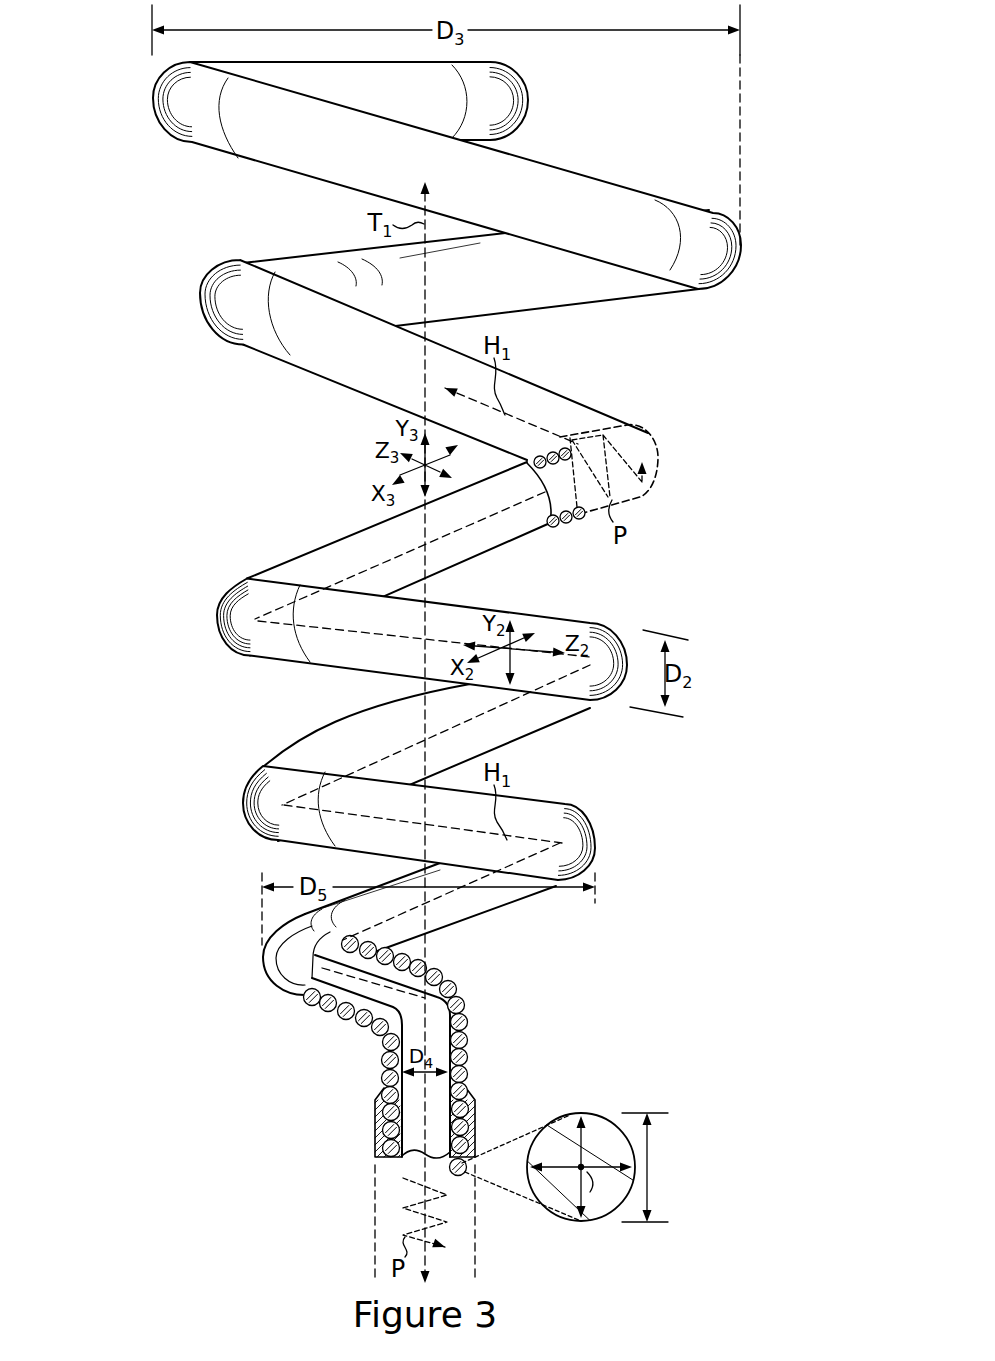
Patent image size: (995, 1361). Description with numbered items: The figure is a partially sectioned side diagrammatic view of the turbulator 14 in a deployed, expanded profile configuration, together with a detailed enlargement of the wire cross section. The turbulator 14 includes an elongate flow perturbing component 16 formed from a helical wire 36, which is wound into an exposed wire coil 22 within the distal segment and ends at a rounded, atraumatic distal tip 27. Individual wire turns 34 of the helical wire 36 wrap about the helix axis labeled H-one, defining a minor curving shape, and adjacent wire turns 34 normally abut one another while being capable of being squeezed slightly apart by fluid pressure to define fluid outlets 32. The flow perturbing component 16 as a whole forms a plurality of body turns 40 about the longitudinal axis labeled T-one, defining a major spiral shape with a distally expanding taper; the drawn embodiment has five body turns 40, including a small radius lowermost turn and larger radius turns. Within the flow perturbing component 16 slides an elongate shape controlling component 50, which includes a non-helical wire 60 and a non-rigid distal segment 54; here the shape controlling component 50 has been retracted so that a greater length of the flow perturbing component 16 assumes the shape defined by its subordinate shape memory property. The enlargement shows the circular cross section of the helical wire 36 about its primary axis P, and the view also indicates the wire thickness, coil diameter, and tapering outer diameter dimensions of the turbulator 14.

The turbulator 14 is at (100, 543).
The elongate flow perturbing component 16 is at (382, 1030).
The exposed wire coil 22 is at (743, 247).
The distal tip 27 is at (532, 100).
The fluid outlets 32 is at (470, 1040).
The wire turns 34 is at (462, 1022).
The helical wire 36 is at (587, 1223).
The body turns 40 is at (150, 98).
The elongate shape controlling component 50 is at (350, 990).
The non-rigid distal segment 54 is at (408, 985).
The non-helical wire 60 is at (336, 1067).